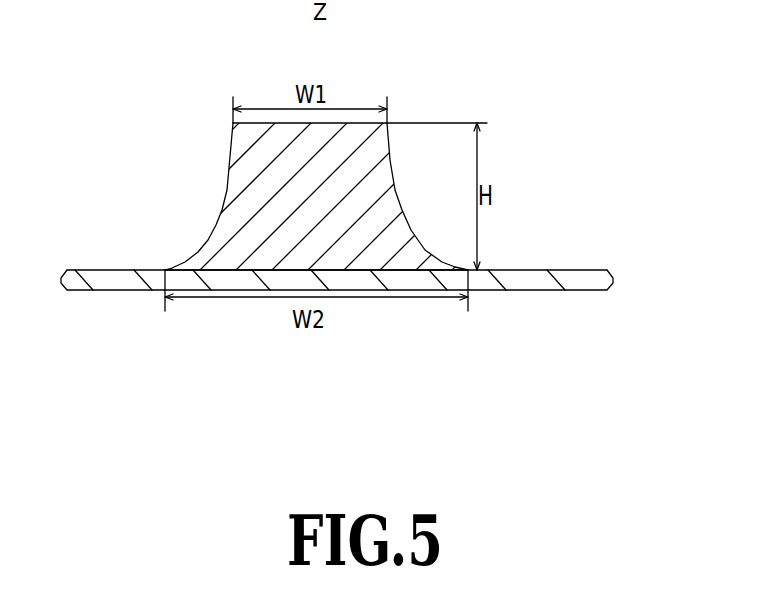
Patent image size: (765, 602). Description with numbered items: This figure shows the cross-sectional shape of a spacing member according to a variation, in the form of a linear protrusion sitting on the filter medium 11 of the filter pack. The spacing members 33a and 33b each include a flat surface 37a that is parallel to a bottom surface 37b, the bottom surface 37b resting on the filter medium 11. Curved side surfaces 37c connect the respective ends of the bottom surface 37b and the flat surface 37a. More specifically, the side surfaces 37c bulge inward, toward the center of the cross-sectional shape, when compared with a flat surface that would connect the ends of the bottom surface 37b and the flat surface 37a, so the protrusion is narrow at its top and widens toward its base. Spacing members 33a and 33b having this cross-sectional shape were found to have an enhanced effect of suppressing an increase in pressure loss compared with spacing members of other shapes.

The filter medium 11 is at (517, 270).
The spacing member 33a is at (345, 193).
The spacing member 33b is at (345, 193).
The flat surface 37a is at (257, 123).
The bottom surface 37b is at (232, 271).
The side surfaces 37c is at (225, 194).